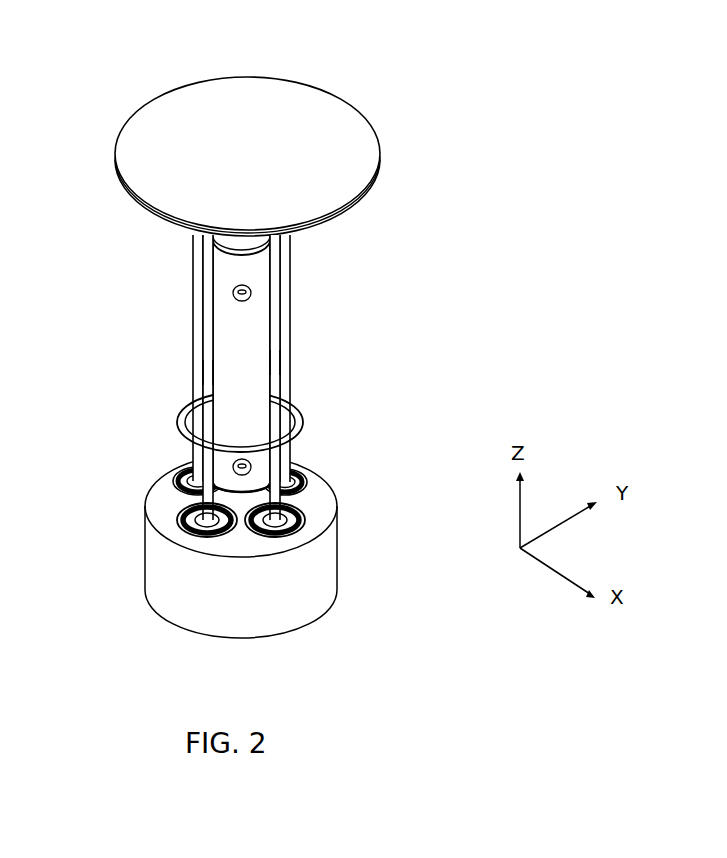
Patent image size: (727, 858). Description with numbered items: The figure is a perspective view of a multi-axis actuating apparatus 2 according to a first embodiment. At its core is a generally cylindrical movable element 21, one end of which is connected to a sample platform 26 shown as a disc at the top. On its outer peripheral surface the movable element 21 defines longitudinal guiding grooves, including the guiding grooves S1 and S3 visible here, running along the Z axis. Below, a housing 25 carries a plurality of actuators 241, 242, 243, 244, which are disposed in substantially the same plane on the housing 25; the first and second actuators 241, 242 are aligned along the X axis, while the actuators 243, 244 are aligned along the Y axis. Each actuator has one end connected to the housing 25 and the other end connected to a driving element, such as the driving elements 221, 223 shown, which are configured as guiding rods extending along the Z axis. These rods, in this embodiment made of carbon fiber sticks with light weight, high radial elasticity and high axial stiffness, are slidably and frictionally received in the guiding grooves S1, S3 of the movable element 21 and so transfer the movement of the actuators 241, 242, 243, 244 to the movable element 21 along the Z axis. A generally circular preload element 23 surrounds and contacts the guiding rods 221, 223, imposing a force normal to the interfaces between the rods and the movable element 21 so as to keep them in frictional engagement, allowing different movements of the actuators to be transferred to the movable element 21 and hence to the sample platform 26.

The multi-axis actuating apparatus 2 is at (240, 321).
The movable element 21 is at (225, 337).
The preload element 23 is at (302, 427).
The housing 25 is at (310, 583).
The sample platform 26 is at (363, 168).
The driving element 221 is at (292, 412).
The driving element 223 is at (187, 413).
The actuator 241 is at (305, 515).
The actuator 242 is at (192, 468).
The actuator 243 is at (186, 519).
The actuator 244 is at (298, 470).
The guiding groove S1 is at (281, 357).
The guiding groove S3 is at (200, 369).